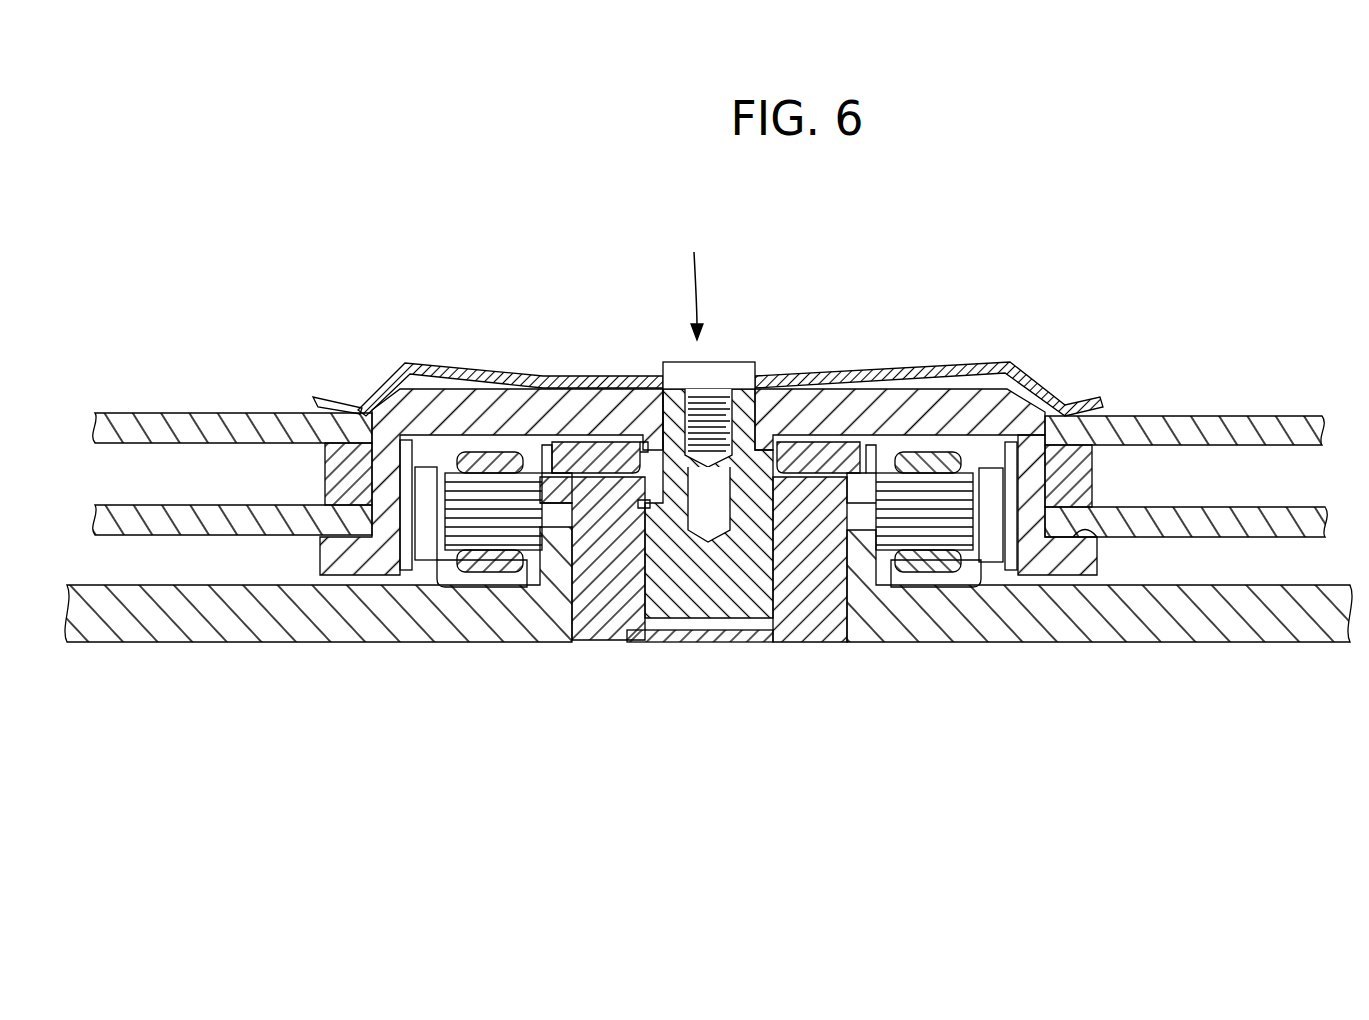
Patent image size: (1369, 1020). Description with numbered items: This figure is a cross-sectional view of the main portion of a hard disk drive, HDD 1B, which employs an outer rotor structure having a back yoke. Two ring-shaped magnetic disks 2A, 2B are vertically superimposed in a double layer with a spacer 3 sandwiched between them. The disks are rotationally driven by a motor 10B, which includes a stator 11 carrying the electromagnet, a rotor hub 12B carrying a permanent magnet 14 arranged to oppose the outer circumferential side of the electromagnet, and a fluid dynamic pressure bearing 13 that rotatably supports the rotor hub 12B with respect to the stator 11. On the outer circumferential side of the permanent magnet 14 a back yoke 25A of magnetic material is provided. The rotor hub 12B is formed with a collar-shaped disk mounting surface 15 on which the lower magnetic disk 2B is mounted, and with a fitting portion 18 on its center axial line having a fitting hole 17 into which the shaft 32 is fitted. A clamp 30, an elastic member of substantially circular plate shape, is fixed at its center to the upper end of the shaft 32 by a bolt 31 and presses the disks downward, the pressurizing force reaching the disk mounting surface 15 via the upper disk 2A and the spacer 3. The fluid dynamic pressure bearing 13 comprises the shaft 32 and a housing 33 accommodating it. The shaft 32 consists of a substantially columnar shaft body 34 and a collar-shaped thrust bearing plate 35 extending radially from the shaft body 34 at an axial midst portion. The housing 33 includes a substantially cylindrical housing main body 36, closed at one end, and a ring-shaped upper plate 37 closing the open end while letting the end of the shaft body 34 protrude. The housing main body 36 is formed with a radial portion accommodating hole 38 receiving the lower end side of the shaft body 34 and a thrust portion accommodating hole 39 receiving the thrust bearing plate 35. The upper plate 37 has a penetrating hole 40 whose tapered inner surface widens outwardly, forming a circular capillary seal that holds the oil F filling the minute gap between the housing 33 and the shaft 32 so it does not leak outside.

The HDD 1B is at (932, 252).
The magnetic disk 2A is at (1232, 416).
The magnetic disk 2B is at (1275, 507).
The spacer 3 is at (1092, 475).
The motor 10B is at (798, 308).
The stator 11 is at (1208, 632).
The rotor hub 12B is at (927, 398).
The fluid dynamic pressure bearing 13 is at (729, 680).
The permanent magnet 14 is at (988, 562).
The disk mounting surface 15 is at (1076, 530).
The fitting hole 17 is at (745, 432).
The fitting portion 18 is at (1060, 443).
The back yoke 25A is at (1008, 570).
The clamp 30 is at (455, 365).
The bolt 31 is at (720, 362).
The shaft 32 is at (693, 280).
The housing 33 is at (800, 653).
The shaft body 34 is at (675, 410).
The thrust bearing plate 35 is at (600, 483).
The housing main body 36 is at (622, 632).
The upper plate 37 is at (805, 447).
The radial portion accommodating hole 38 is at (663, 620).
The thrust portion accommodating hole 39 is at (573, 478).
The penetrating hole 40 is at (640, 447).
The oil F is at (640, 508).